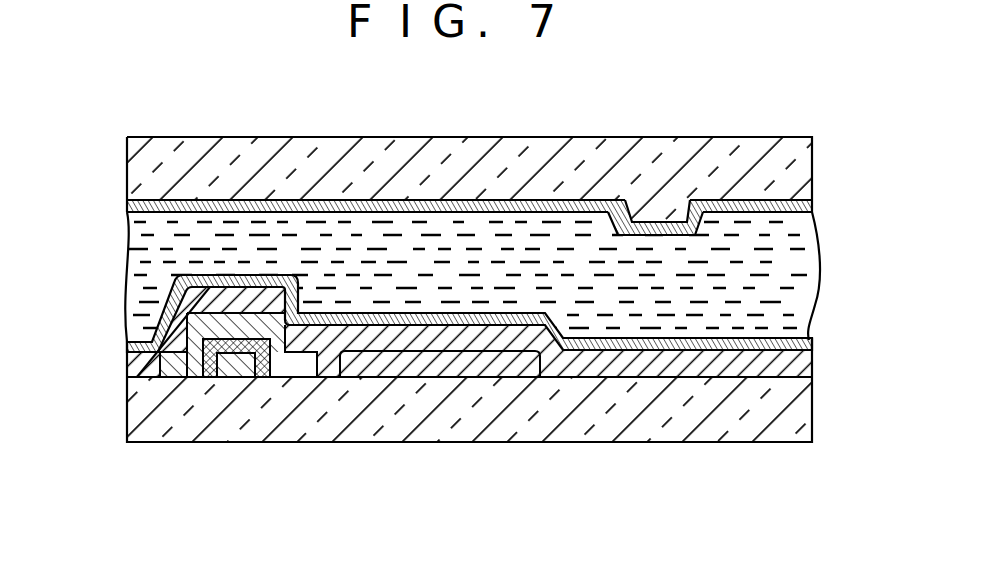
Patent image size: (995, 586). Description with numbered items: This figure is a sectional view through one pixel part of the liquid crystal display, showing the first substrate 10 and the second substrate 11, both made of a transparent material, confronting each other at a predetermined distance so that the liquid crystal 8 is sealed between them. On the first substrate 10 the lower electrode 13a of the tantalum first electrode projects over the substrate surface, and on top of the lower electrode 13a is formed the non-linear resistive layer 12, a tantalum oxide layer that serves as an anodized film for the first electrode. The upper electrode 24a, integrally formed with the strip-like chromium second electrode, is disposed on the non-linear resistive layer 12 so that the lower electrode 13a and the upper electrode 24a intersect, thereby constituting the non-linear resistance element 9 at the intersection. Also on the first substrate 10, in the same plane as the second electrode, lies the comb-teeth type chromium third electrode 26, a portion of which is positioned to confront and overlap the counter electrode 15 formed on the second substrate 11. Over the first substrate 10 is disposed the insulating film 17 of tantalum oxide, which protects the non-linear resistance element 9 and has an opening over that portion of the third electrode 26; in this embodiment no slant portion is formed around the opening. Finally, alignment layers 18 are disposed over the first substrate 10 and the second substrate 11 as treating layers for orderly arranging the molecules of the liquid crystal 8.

The liquid crystal 8 is at (790, 268).
The non-linear resistance element 9 is at (231, 296).
The first substrate 10 is at (798, 405).
The second substrate 11 is at (803, 164).
The non-linear resistive layer 12 is at (260, 378).
The lower electrode 13a is at (230, 378).
The counter electrode 15 is at (658, 207).
The insulating film 17 is at (798, 368).
The alignment layer 18 is at (806, 208).
The upper electrode 24a is at (173, 295).
The third electrode 26 is at (427, 372).